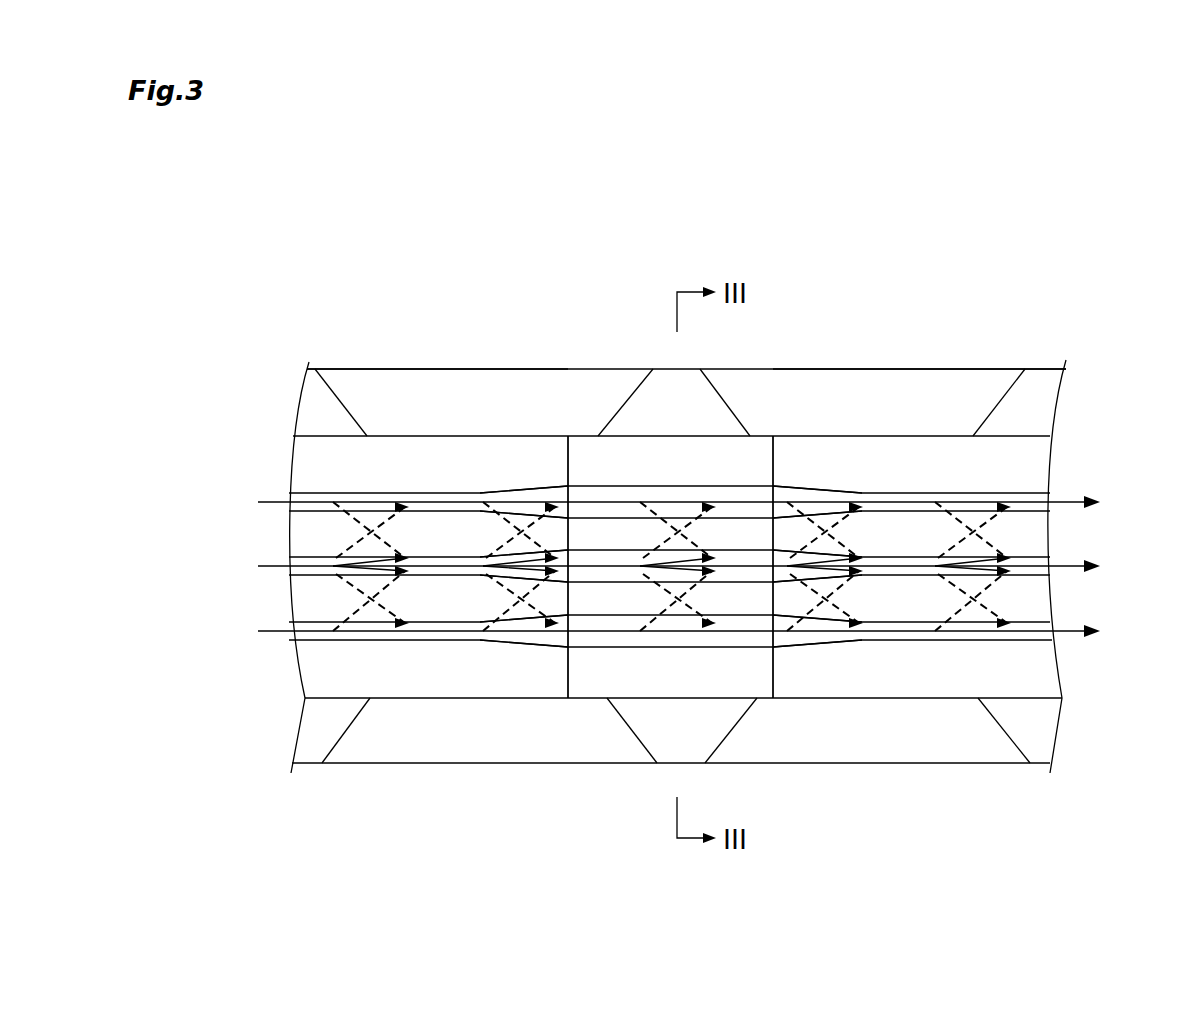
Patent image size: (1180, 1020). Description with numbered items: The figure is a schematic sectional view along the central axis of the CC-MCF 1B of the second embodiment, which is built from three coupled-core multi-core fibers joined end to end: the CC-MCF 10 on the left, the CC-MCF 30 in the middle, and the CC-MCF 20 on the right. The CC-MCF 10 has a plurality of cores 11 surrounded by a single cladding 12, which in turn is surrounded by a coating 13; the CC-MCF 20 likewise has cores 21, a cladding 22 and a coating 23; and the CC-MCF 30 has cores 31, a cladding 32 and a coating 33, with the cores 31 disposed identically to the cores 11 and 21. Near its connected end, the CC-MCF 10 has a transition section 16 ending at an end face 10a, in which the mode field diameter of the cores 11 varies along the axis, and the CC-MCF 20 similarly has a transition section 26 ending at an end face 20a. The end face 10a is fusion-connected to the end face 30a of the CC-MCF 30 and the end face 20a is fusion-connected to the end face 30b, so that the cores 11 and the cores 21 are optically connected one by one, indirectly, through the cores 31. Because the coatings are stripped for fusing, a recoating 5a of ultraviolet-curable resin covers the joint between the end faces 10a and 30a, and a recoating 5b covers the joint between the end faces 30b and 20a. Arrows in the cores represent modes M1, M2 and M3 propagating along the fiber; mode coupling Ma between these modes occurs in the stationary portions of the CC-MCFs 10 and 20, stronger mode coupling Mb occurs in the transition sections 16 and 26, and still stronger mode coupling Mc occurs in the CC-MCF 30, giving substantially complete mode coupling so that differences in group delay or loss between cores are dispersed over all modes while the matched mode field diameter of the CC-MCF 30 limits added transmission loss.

The CC-MCF 1B is at (1128, 222).
The CC-MCF 10 is at (570, 272).
The CC-MCF 30 is at (772, 272).
The CC-MCF 20 is at (1065, 272).
The coating 13 is at (297, 395).
The cladding 12 is at (295, 445).
The cores 11 is at (313, 495).
The transition section 16 is at (572, 350).
The recoating 5a is at (377, 385).
The coating 33 is at (670, 397).
The cladding 32 is at (695, 453).
The cores 31 is at (640, 620).
The end face 30a is at (568, 665).
The end face 30b is at (773, 665).
The end face 10a is at (570, 685).
The end face 20a is at (773, 685).
The coating 23 is at (1058, 402).
The cladding 22 is at (1050, 457).
The cores 21 is at (1030, 497).
The transition section 26 is at (870, 350).
The recoating 5b is at (961, 385).
The mode M1 is at (447, 497).
The mode M2 is at (447, 570).
The mode M3 is at (470, 634).
The mode coupling Ma is at (368, 628).
The mode coupling Mb is at (513, 618).
The mode coupling Mc is at (667, 608).